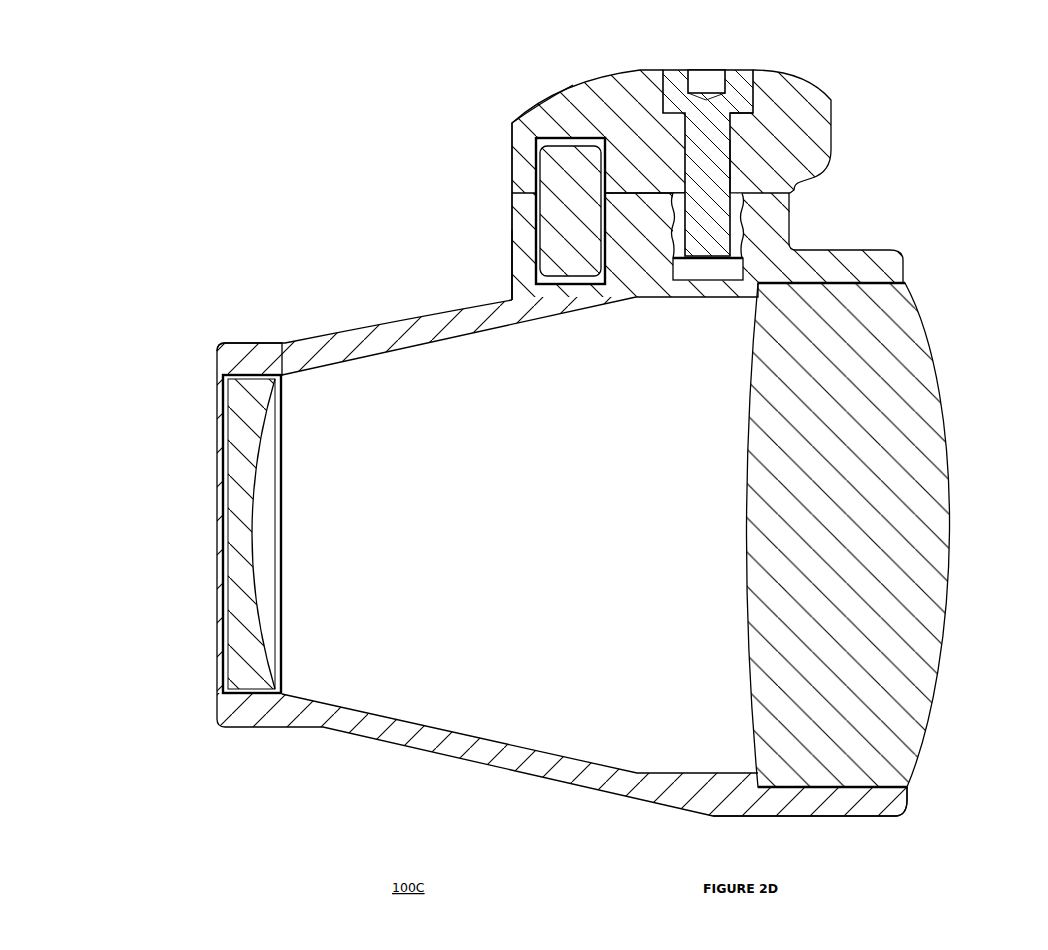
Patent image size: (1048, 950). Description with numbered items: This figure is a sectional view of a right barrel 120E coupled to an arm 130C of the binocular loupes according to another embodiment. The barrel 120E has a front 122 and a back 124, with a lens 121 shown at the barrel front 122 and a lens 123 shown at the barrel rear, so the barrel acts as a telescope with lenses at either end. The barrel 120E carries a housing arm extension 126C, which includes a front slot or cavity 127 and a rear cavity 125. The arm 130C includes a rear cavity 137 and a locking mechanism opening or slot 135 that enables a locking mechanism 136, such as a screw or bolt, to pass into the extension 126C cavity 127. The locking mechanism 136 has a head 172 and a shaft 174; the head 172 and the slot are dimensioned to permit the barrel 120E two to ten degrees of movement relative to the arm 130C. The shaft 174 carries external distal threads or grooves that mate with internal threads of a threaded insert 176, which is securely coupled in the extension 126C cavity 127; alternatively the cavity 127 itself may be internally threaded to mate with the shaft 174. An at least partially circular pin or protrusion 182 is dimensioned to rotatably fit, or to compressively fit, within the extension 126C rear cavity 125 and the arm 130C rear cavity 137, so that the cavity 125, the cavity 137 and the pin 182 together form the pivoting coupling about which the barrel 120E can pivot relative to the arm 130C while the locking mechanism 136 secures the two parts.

The right barrel 120E is at (387, 742).
The lens 121 is at (950, 505).
The barrel front 122 is at (905, 808).
The lens 123 is at (223, 518).
The barrel back 124 is at (217, 358).
The rear cavity 125 is at (573, 284).
The housing arm extension 126C is at (509, 262).
The front slot or cavity 127 is at (700, 272).
The arm 130C is at (593, 93).
The locking mechanism opening or slot 135 is at (655, 128).
The locking mechanism 136 is at (730, 70).
The rear cavity 137 is at (524, 128).
The head 172 is at (698, 70).
The shaft 174 is at (735, 148).
The threaded insert 176 is at (748, 207).
The pin or protrusion 182 is at (542, 228).